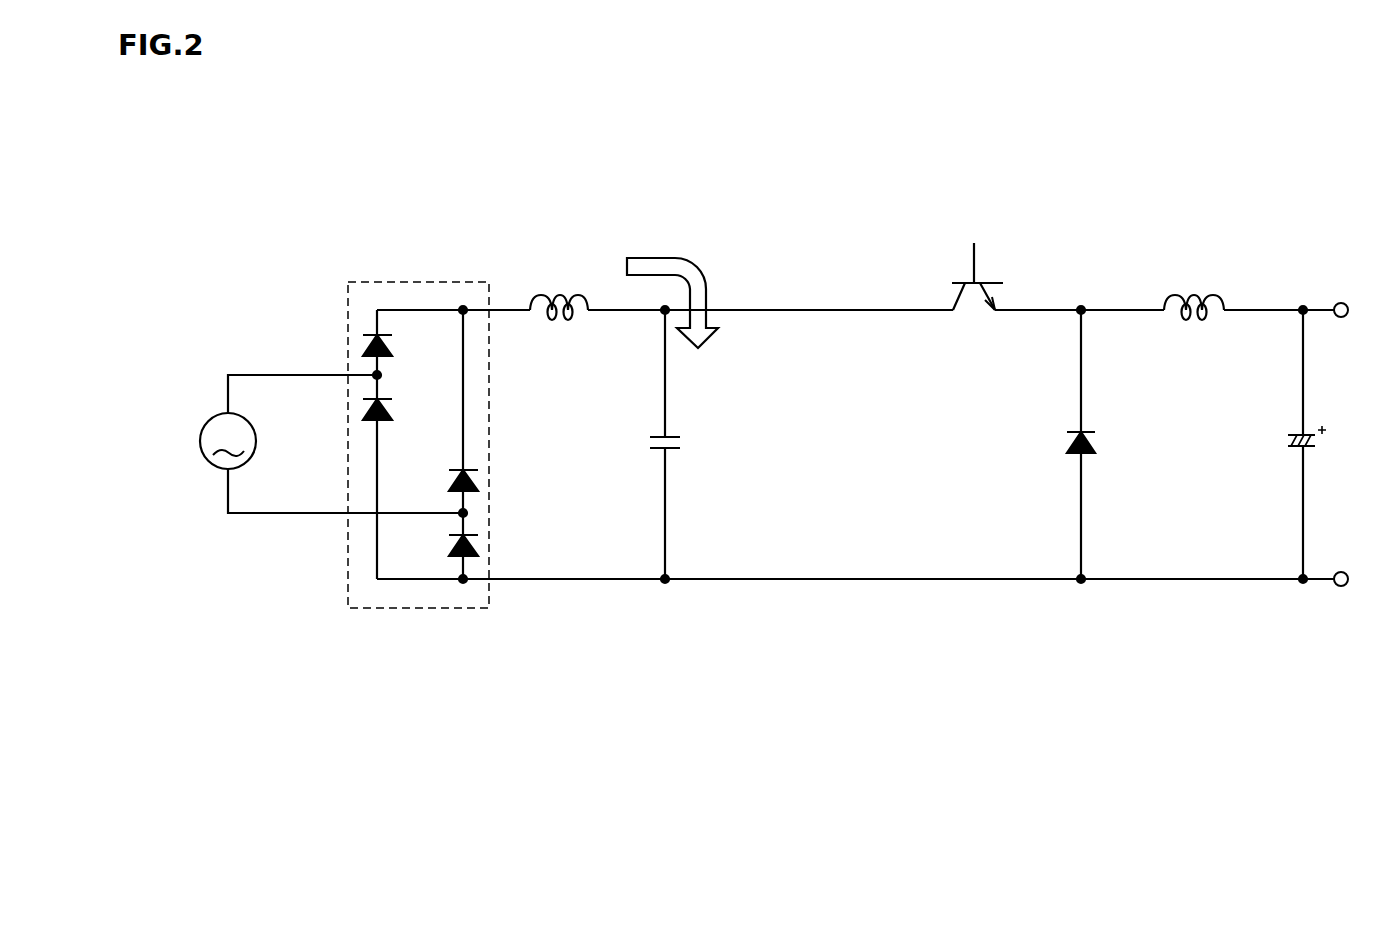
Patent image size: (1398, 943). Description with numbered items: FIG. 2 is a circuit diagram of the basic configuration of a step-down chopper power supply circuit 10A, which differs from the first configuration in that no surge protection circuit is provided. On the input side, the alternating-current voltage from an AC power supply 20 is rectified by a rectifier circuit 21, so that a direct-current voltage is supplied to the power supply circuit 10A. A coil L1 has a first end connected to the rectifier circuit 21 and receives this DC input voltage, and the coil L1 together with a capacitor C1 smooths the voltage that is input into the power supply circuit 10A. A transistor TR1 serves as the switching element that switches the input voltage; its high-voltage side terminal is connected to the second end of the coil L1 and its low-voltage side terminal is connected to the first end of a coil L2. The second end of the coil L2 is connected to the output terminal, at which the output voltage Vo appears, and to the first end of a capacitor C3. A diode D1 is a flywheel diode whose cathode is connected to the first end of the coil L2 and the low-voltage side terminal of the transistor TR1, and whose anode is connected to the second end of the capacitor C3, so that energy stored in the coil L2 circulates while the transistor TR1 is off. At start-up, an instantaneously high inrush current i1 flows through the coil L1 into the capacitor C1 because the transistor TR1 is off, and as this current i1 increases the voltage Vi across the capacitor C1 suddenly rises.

The power supply circuit 10A is at (1306, 232).
The AC power supply 20 is at (209, 417).
The rectifier circuit 21 is at (416, 282).
The coil L1 is at (561, 294).
The capacitor C1 is at (670, 437).
The transistor TR1 is at (989, 282).
The diode D1 is at (1086, 432).
The coil L2 is at (1193, 294).
The capacitor C3 is at (1308, 448).
The voltage Vi is at (661, 297).
The current i1 is at (672, 289).
The output voltage terminal Vo is at (1339, 309).